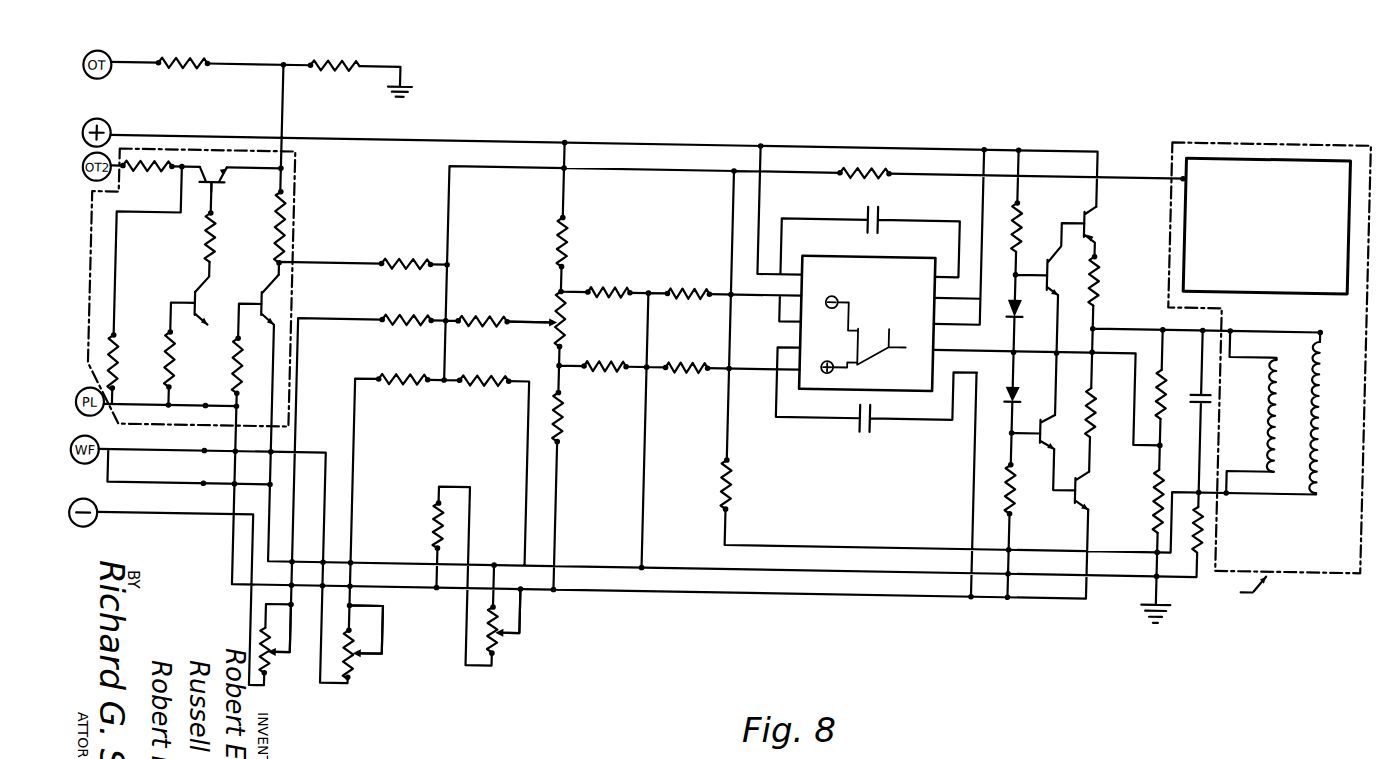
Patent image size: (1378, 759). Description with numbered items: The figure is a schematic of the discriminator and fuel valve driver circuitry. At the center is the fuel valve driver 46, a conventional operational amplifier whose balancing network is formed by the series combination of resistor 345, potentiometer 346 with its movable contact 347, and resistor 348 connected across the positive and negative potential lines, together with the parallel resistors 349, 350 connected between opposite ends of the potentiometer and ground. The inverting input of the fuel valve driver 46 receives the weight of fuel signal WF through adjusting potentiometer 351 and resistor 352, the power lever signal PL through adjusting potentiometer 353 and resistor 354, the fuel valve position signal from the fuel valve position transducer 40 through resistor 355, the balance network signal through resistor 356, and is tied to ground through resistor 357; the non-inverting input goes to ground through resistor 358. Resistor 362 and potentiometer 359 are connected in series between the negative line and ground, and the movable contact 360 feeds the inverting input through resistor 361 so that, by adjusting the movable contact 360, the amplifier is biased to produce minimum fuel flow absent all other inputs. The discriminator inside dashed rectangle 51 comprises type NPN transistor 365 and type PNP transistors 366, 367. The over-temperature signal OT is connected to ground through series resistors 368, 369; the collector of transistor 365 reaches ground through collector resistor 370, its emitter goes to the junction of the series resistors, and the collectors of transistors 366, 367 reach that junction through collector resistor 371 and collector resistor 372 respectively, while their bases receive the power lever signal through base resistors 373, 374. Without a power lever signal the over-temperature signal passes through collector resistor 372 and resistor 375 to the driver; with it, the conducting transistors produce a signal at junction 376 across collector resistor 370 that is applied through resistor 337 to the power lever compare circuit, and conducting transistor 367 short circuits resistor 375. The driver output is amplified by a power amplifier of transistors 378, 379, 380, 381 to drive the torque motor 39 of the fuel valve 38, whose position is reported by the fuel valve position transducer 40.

The resistor 368 is at (180, 68).
The resistor 369 is at (345, 66).
The resistor 337 is at (135, 180).
The junction 376 is at (223, 180).
The type NPN transistor 365 is at (209, 196).
The dashed rectangle 51 is at (292, 222).
The collector resistor 371 is at (204, 250).
The collector resistor 372 is at (272, 248).
The type PNP transistor 366 is at (192, 304).
The type PNP transistor 367 is at (259, 304).
The collector resistor 370 is at (169, 352).
The base resistor 373 is at (114, 386).
The base resistor 374 is at (240, 390).
The resistor 375 is at (405, 265).
The resistor 354 is at (397, 322).
The resistor 356 is at (478, 321).
The movable contact 347 is at (549, 320).
The resistor 345 is at (566, 236).
The potentiometer 346 is at (565, 325).
The resistor 348 is at (565, 430).
The resistor 349 is at (605, 290).
The resistor 350 is at (604, 372).
The resistor 357 is at (682, 298).
The resistor 358 is at (684, 372).
The resistor 352 is at (400, 388).
The resistor 361 is at (478, 381).
The resistor 362 is at (438, 528).
The potentiometer 359 is at (503, 656).
The movable contact 360 is at (515, 640).
The adjusting potentiometer 351 is at (362, 672).
The adjusting potentiometer 353 is at (278, 668).
The resistor 355 is at (848, 174).
The fuel valve driver 46 is at (870, 268).
The transistor 378 is at (1089, 224).
The transistor 379 is at (1046, 286).
The transistor 380 is at (1045, 440).
The transistor 381 is at (1082, 488).
The torque motor 39 is at (1270, 402).
The fuel valve position transducer 40 is at (1265, 284).
The fuel valve 38 is at (1350, 131).